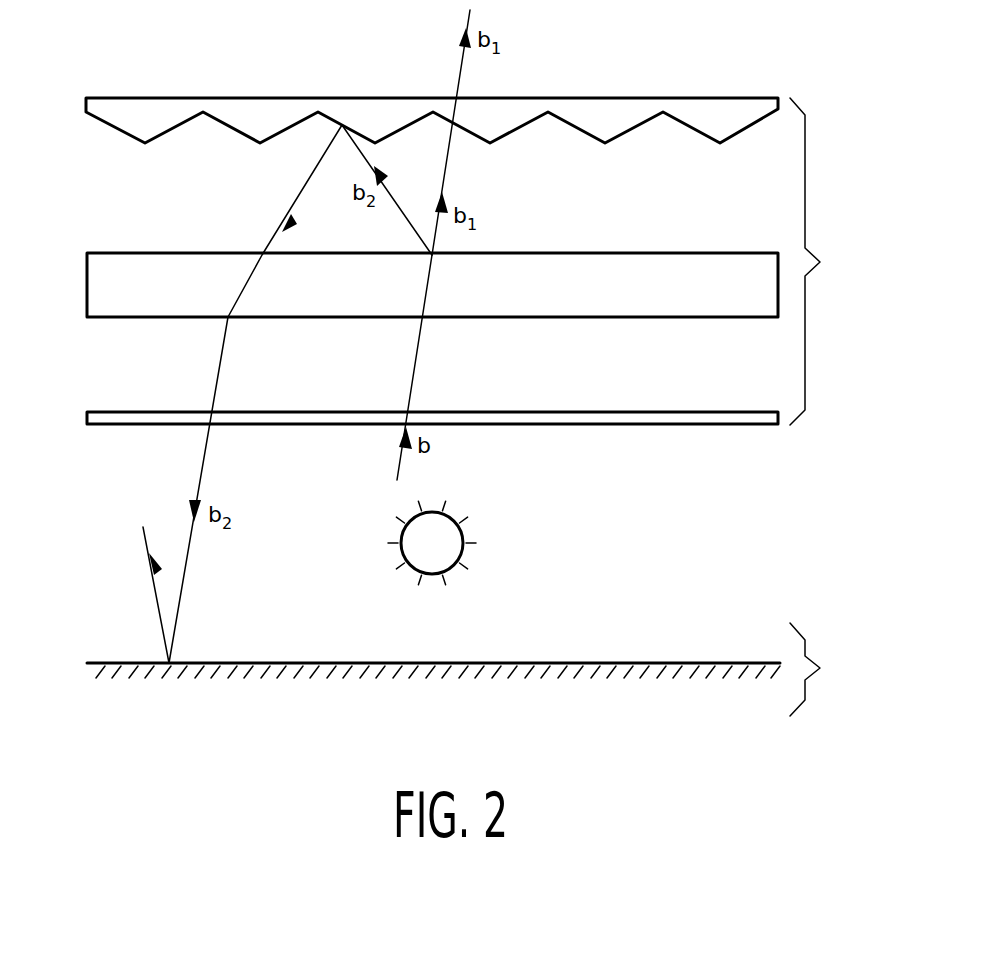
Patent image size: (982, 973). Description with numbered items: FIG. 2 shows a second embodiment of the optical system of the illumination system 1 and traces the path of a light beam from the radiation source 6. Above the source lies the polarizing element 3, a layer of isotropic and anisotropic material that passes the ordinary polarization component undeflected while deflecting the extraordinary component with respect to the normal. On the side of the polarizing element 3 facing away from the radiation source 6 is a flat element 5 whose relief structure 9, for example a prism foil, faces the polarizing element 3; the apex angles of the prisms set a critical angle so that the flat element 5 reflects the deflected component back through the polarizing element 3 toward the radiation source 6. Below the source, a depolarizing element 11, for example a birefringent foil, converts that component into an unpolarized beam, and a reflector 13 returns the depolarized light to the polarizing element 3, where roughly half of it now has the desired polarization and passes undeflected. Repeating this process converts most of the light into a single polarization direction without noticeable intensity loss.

The illumination system 1 is at (813, 270).
The polarizing element 3 is at (748, 272).
The flat element 5 is at (743, 110).
The radiation source 6 is at (447, 539).
The relief structure 9 is at (96, 151).
The depolarizing element 11 is at (754, 419).
The reflector 13 is at (751, 661).